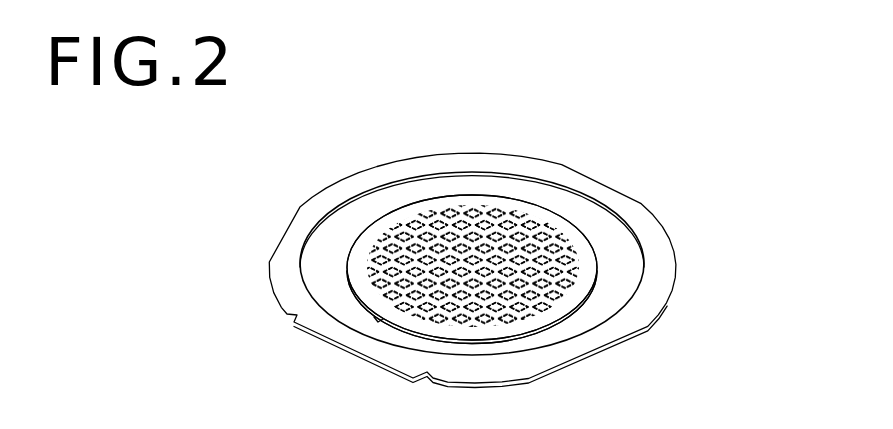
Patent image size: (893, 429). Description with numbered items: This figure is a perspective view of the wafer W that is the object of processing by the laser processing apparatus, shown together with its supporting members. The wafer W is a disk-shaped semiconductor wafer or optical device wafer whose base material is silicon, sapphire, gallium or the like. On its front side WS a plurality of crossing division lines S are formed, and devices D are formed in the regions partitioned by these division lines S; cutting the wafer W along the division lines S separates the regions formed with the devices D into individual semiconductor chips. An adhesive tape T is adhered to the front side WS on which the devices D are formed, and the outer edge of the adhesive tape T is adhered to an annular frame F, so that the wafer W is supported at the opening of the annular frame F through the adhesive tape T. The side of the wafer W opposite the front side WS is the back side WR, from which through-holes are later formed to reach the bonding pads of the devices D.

The wafer W is at (371, 222).
The division lines S is at (407, 238).
The devices D is at (555, 218).
The back side WR is at (582, 232).
The adhesive tape T is at (608, 235).
The annular frame F is at (660, 258).
The front side WS is at (558, 325).